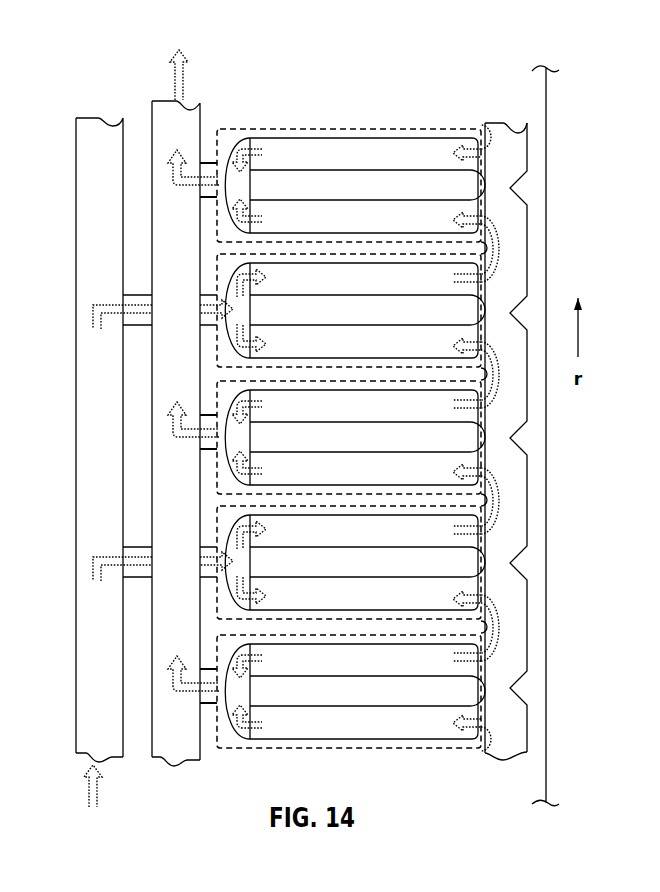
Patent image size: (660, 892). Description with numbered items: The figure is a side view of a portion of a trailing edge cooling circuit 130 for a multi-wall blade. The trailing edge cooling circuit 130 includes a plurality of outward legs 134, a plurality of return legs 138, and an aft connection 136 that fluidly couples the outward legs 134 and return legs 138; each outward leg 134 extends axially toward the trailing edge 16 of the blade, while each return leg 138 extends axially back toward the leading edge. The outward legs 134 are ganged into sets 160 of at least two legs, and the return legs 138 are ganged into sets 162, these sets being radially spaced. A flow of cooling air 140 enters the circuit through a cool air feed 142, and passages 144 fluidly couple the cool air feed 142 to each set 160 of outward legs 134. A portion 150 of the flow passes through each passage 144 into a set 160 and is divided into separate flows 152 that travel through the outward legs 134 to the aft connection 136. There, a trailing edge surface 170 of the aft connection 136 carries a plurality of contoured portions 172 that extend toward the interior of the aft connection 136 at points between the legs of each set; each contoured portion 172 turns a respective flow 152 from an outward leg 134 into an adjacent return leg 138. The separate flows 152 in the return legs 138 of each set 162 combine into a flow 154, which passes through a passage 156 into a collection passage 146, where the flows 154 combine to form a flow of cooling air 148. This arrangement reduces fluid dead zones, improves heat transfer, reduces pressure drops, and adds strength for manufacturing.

The trailing edge 16 is at (572, 600).
The trailing edge cooling circuit 130 is at (402, 76).
The outward legs 134 is at (383, 324).
The aft connection 136 is at (505, 122).
The return legs 138 is at (383, 199).
The flow of cooling air 140 is at (98, 792).
The cool air feed 142 is at (76, 652).
The passages 144 is at (134, 326).
The collection passage 146 is at (187, 760).
The flow of cooling air 148 is at (183, 52).
The portion of the flow of cooling air 150 is at (103, 306).
The separate flows 152 is at (255, 215).
The flow 154 is at (198, 196).
The passage 156 is at (203, 204).
The sets of outward legs 160 is at (212, 266).
The sets of return legs 162 is at (214, 148).
The trailing edge surface 170 is at (526, 247).
The contoured portions 172 is at (530, 441).